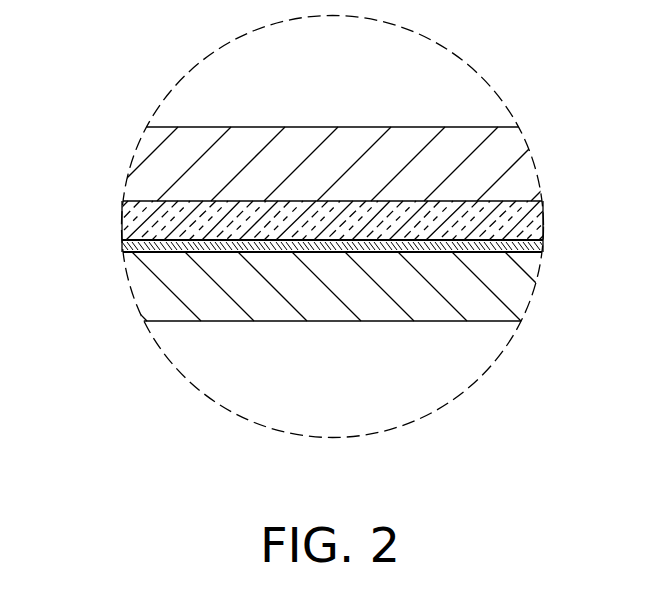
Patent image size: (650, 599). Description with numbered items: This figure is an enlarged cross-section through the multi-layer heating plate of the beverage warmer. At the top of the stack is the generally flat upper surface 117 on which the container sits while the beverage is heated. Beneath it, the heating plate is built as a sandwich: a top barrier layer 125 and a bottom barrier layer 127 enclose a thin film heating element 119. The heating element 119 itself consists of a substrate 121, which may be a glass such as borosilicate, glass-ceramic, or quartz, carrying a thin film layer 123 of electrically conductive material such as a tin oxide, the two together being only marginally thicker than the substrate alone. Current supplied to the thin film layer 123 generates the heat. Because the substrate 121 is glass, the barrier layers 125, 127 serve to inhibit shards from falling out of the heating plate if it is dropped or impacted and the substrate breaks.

The upper surface 117 is at (420, 127).
The thin film heating element 119 is at (110, 202).
The substrate 121 is at (525, 220).
The thin film layer 123 is at (538, 248).
The top barrier layer 125 is at (173, 160).
The bottom barrier layer 127 is at (512, 287).